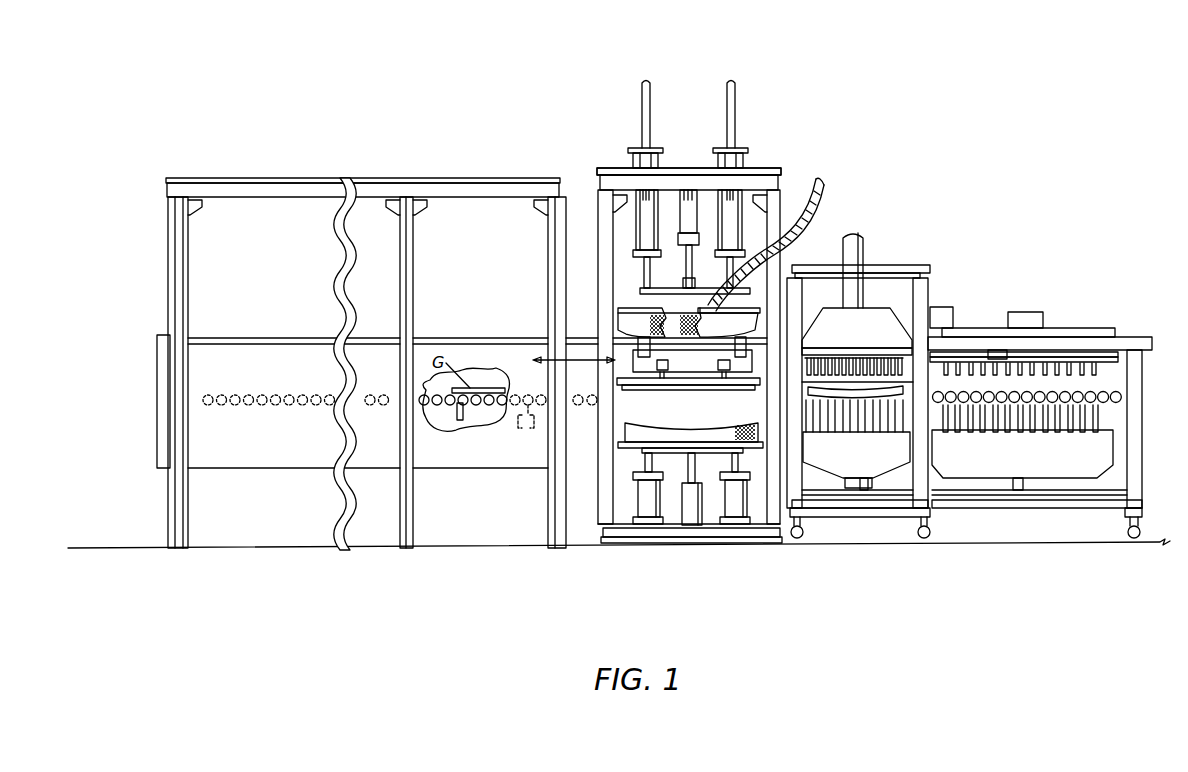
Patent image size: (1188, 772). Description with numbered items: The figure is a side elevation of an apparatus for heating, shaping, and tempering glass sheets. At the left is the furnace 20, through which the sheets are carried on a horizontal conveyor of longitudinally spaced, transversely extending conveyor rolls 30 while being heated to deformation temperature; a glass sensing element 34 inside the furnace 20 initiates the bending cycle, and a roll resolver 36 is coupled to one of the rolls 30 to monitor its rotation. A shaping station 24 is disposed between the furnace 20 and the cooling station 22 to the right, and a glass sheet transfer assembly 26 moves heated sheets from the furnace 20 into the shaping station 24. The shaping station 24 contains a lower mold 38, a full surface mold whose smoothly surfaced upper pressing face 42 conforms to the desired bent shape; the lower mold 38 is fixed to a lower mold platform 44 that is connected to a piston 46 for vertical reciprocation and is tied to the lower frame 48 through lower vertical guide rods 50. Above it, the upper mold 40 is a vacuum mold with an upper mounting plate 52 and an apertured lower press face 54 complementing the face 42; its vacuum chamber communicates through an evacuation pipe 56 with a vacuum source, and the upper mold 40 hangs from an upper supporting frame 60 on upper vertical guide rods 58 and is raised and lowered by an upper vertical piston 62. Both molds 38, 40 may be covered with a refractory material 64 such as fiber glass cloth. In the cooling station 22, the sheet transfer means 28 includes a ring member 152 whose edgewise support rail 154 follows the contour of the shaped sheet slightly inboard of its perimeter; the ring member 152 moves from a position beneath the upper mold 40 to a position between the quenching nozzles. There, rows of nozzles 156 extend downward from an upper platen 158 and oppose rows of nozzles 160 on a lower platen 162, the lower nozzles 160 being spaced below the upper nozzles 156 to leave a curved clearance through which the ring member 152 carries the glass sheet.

The furnace 20 is at (421, 108).
The cooling station 22 is at (1028, 221).
The shaping station 24 is at (688, 42).
The glass sheet transfer assembly 26 is at (671, 391).
The sheet transfer means 28 is at (862, 387).
The conveyor rolls 30 is at (284, 405).
The glass sensing element 34 is at (460, 412).
The roll resolver 36 is at (515, 422).
The lower mold 38 is at (625, 431).
The upper mold 40 is at (630, 323).
The upper pressing face 42 is at (650, 404).
The lower mold platform 44 is at (622, 448).
The piston 46 is at (692, 515).
The lower frame 48 is at (712, 545).
The lower vertical guide rods 50 is at (648, 510).
The upper mounting plate 52 is at (743, 307).
The apertured lower press face 54 is at (745, 331).
The evacuation pipe 56 is at (826, 197).
The upper vertical guide rods 58 is at (725, 99).
The upper supporting frame 60 is at (762, 168).
The upper vertical piston 62 is at (685, 238).
The refractory material 64 is at (652, 328).
The ring member 152 is at (805, 390).
The support rail 154 is at (903, 390).
The nozzles 156 is at (905, 368).
The upper platen 158 is at (893, 312).
The nozzles 160 is at (905, 415).
The lower platen 162 is at (892, 465).